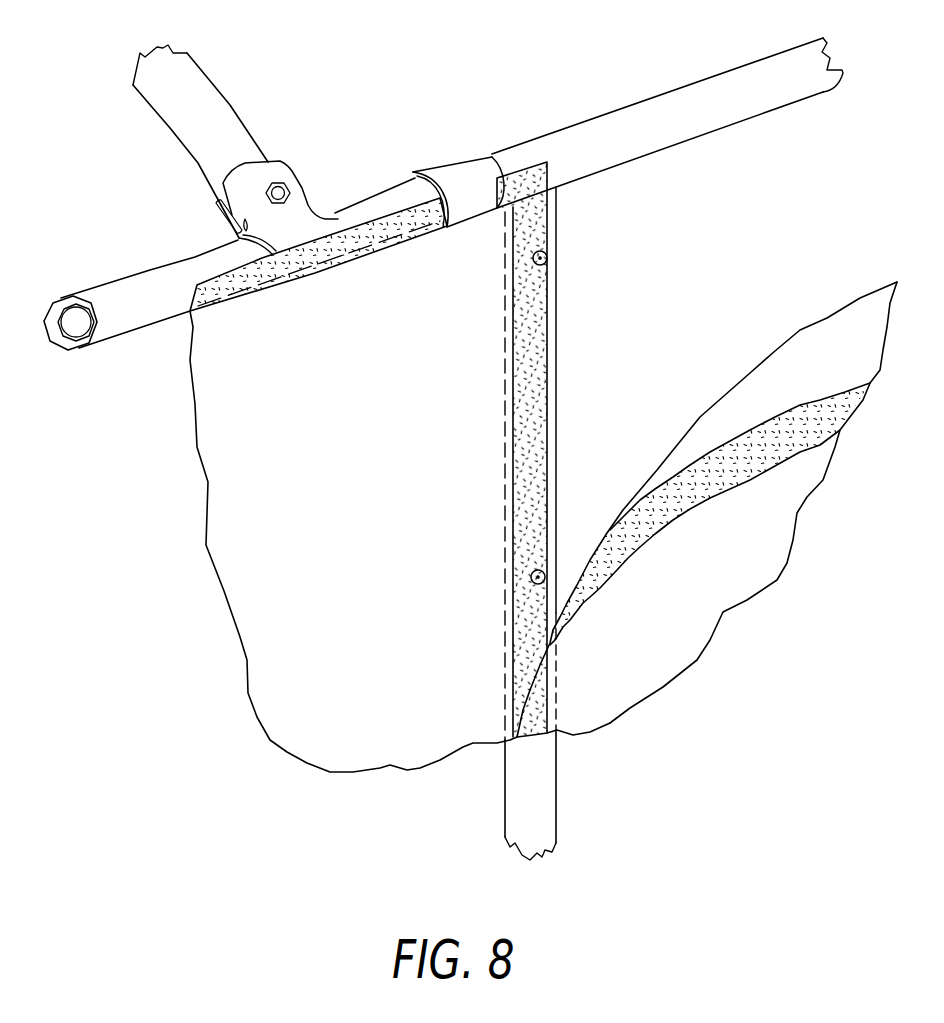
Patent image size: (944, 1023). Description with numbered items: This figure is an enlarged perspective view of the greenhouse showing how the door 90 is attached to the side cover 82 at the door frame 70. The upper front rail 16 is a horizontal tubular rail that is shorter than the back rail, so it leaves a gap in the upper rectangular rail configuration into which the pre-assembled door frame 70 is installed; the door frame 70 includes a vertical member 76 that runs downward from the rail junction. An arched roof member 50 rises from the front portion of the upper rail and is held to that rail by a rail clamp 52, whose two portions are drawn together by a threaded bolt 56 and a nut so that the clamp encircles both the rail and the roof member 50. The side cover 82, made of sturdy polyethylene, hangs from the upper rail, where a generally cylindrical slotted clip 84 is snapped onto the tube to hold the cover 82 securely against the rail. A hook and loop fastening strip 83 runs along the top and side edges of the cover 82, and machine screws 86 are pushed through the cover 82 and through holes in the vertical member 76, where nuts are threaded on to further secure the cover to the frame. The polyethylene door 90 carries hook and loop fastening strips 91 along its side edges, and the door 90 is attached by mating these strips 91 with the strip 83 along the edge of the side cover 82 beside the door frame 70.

The front rail 16 is at (127, 281).
The arched roof member 50 is at (214, 99).
The rail clamp 52 is at (266, 168).
The threaded bolt 56 is at (290, 190).
The door frame 70 is at (710, 90).
The vertical member 76 is at (540, 795).
The side cover 82 is at (354, 388).
The hook and loop fastening strip 83 is at (533, 403).
The clip 84 is at (468, 157).
The machine screw 86 is at (546, 253).
The door 90 is at (723, 596).
The hook and loop fastening strips 91 is at (800, 433).